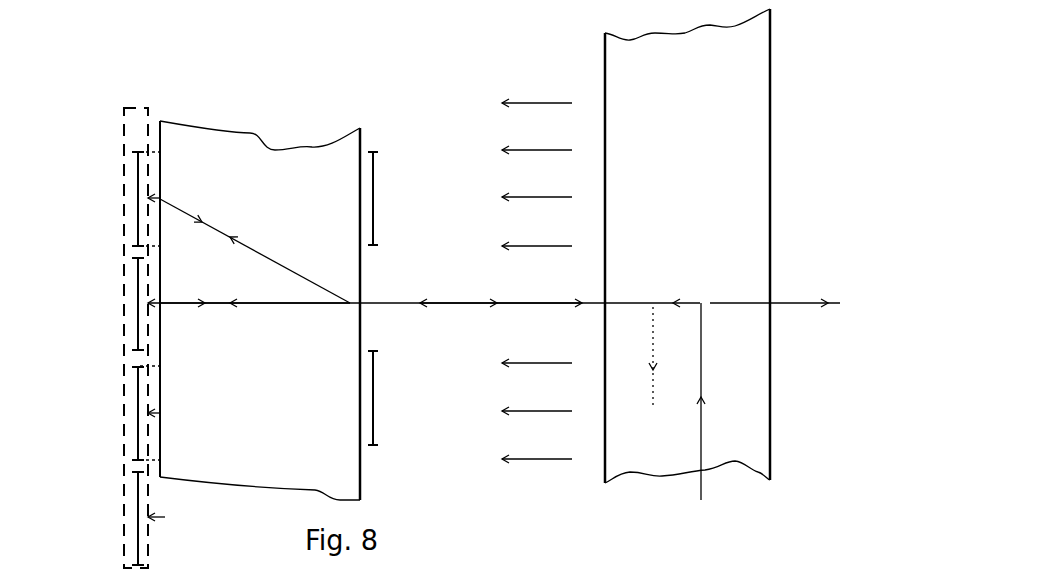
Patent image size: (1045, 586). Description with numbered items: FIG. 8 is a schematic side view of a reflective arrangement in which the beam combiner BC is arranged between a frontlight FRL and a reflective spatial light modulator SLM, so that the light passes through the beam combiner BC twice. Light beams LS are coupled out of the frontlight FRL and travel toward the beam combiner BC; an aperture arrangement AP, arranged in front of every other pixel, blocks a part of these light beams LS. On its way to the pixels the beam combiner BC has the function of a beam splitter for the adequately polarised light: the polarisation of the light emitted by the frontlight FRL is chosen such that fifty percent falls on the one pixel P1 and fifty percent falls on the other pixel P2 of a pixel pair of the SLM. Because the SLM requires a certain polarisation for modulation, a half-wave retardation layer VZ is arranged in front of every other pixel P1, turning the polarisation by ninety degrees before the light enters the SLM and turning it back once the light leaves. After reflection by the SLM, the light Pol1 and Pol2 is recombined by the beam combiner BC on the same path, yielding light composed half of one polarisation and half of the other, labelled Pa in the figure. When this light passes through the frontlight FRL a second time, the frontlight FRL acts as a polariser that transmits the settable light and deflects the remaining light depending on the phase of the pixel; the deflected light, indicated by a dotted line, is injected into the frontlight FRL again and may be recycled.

The spatial light modulator SLM is at (92, 444).
The λ/2 layer VZ is at (152, 163).
The pixel P1 is at (140, 193).
The other pixel P2 is at (138, 335).
The beam combiner BC is at (269, 202).
The light Pol1 is at (255, 251).
The light Pol2 is at (255, 317).
The aperture arrangement AP is at (375, 188).
The light with 50% Pa1 + 50% Pa2 polarization Pa is at (487, 318).
The light beams LS is at (548, 460).
The frontlight FRL is at (703, 109).